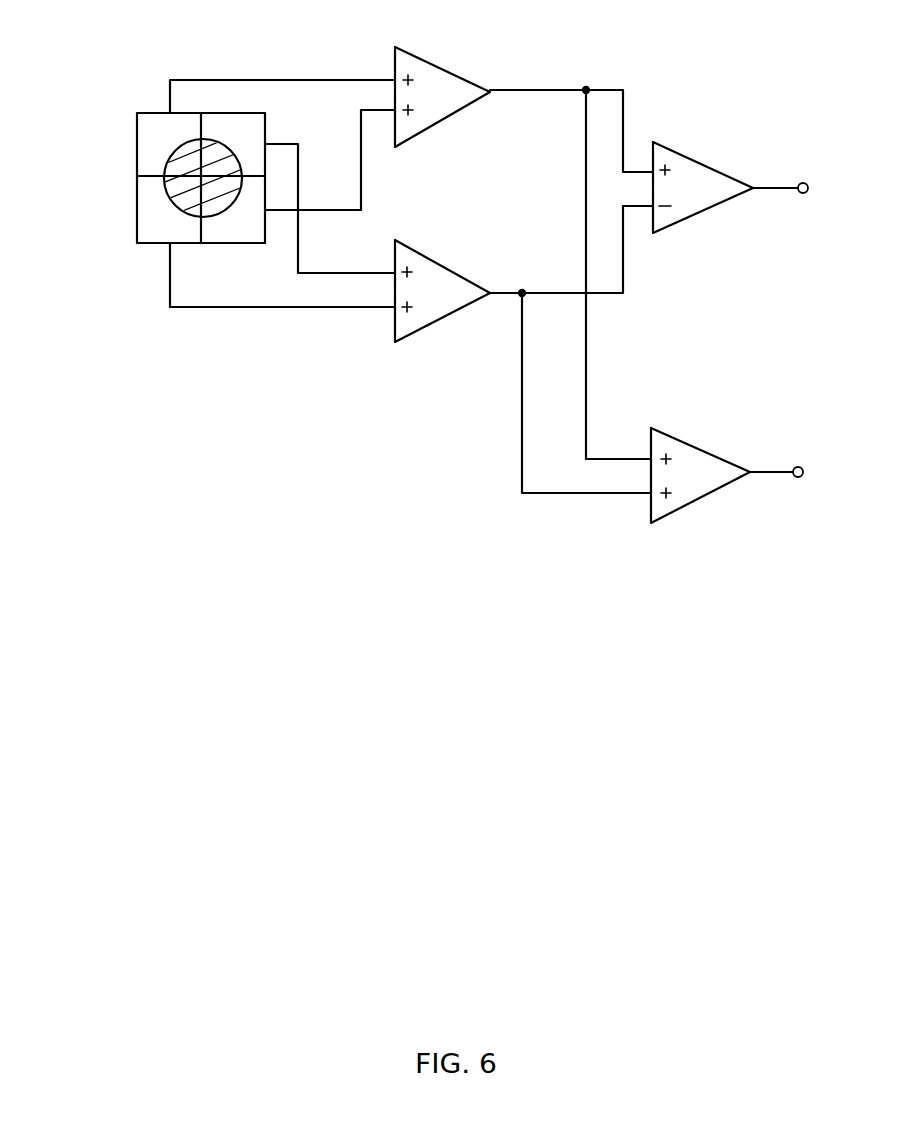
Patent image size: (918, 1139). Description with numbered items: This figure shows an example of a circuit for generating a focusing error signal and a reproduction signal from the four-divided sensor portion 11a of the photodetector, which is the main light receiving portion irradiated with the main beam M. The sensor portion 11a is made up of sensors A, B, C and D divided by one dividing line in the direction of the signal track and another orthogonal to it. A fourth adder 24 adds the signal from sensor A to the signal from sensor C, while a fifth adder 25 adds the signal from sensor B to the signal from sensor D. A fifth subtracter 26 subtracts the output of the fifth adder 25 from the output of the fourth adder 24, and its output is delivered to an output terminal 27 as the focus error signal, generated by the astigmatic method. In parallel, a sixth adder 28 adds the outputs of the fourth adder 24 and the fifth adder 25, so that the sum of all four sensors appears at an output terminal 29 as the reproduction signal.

The four-divided sensor portion 11a is at (137, 228).
The main beam M is at (168, 182).
The fourth adder 24 is at (440, 80).
The fifth adder 25 is at (430, 270).
The fifth subtracter 26 is at (710, 177).
The output terminal 27 is at (803, 195).
The sixth adder 28 is at (695, 485).
The output terminal 29 is at (798, 478).